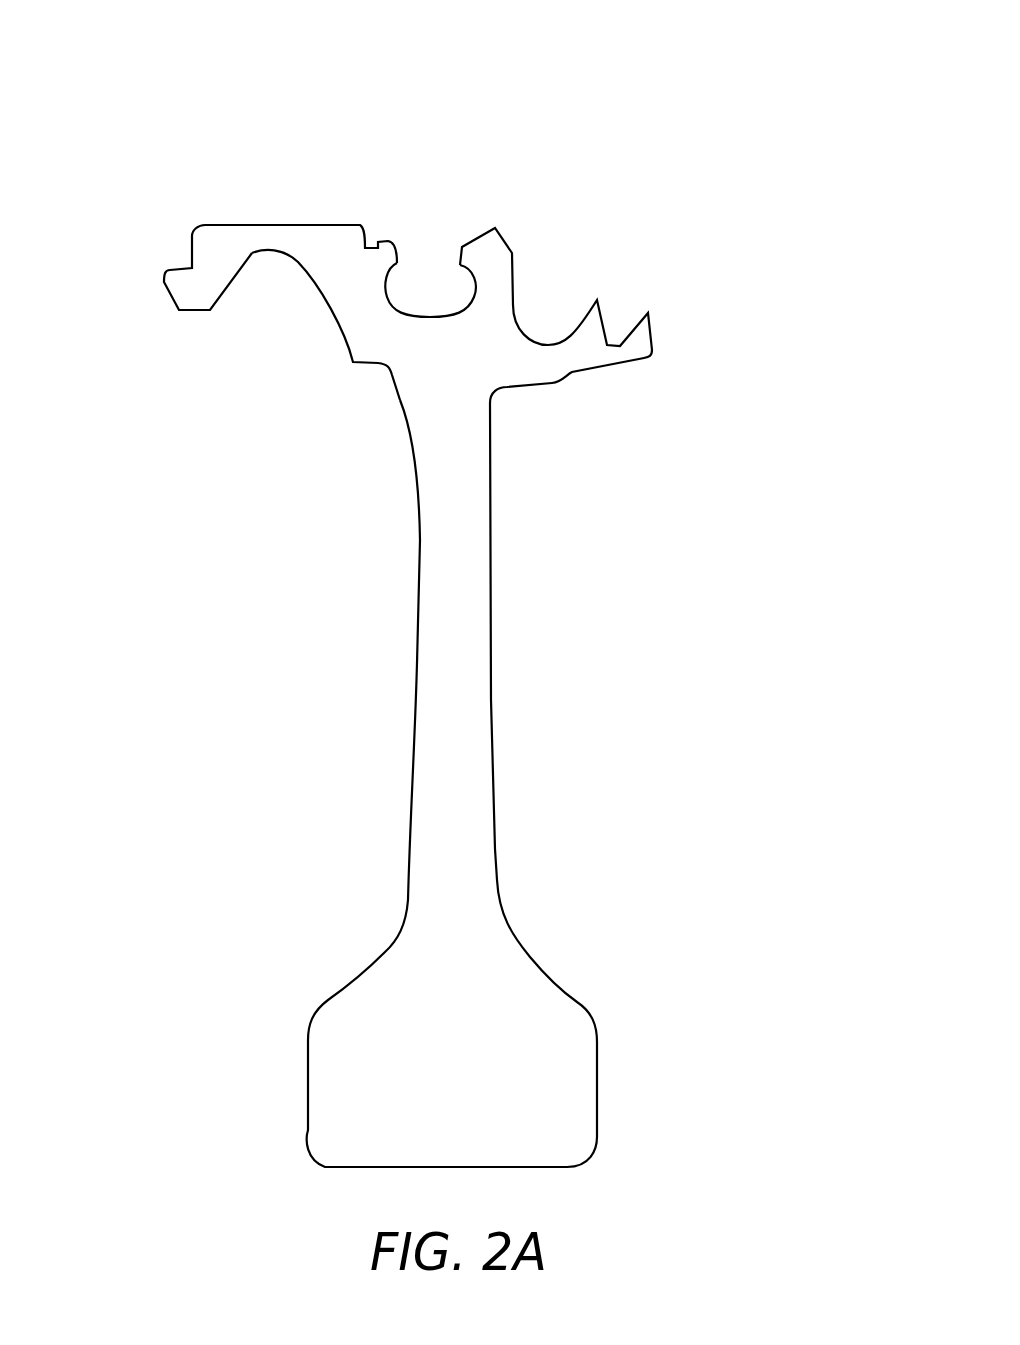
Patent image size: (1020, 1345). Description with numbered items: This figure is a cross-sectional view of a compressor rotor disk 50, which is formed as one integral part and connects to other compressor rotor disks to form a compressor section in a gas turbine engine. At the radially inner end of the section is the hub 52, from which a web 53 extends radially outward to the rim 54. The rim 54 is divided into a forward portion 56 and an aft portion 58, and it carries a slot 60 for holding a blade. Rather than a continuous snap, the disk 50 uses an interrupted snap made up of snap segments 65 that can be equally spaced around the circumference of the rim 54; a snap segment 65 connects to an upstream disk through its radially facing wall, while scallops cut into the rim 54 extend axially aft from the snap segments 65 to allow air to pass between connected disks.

The compressor rotor disk 50 is at (804, 320).
The hub 52 is at (660, 944).
The web 53 is at (558, 634).
The rim 54 is at (558, 111).
The forward portion 56 is at (157, 145).
The aft portion 58 is at (662, 241).
The slot 60 is at (426, 239).
The snap segment 65 is at (139, 341).